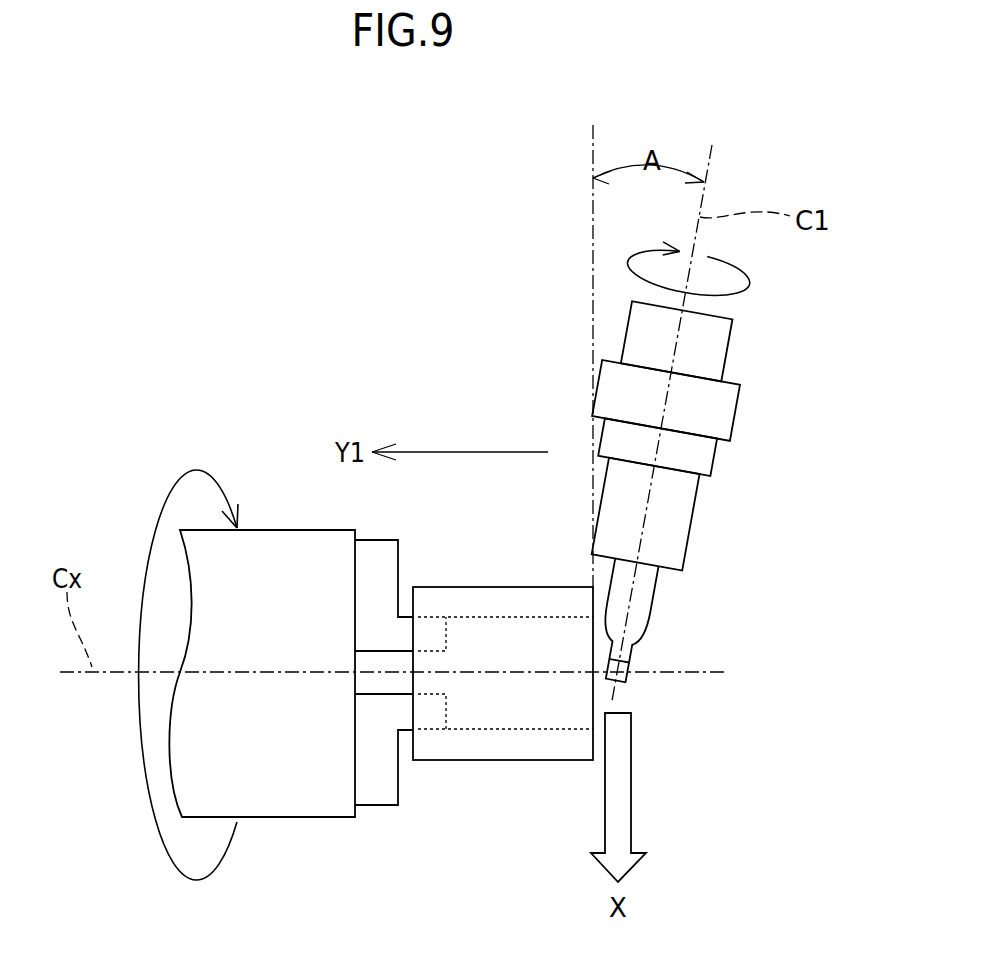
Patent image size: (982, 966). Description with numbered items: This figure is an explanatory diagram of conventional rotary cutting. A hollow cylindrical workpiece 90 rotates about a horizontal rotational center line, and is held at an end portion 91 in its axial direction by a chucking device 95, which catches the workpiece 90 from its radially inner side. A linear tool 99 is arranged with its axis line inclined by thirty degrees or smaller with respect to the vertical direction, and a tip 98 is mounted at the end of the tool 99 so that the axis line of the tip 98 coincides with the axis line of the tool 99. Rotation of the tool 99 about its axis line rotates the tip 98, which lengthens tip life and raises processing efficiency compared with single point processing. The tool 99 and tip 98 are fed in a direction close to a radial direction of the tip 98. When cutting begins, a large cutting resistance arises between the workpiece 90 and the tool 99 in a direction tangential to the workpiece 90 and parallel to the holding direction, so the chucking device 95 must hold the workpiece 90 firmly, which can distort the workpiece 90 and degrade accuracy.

The workpiece 90 is at (520, 760).
The end portion 91 is at (413, 708).
The chucking device 95 is at (383, 807).
The tip 98 is at (633, 680).
The tool 99 is at (695, 520).